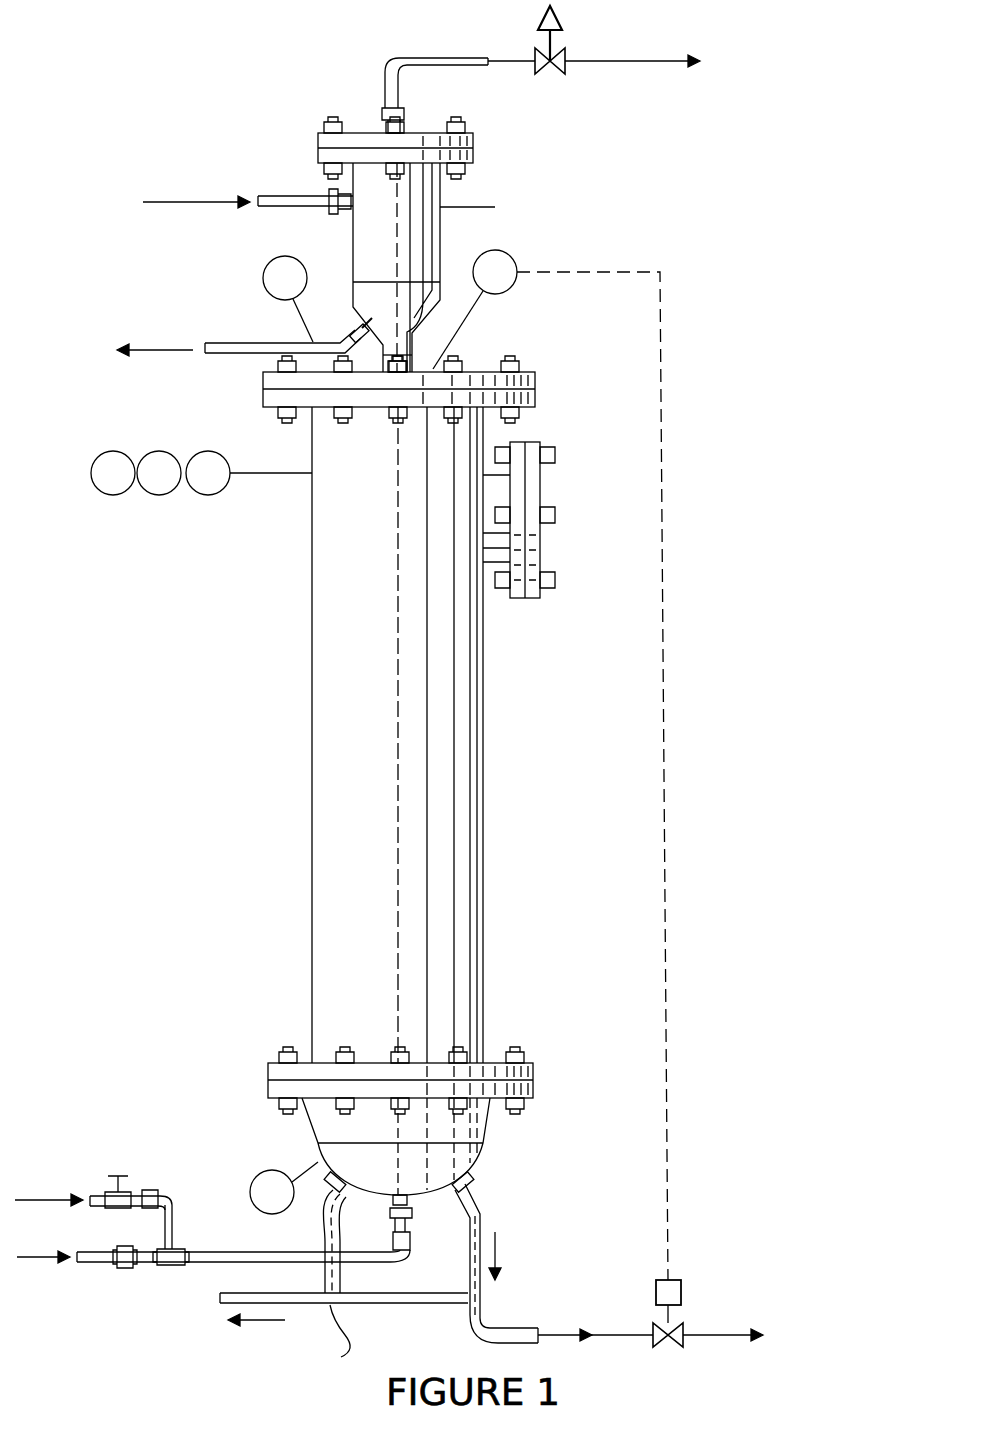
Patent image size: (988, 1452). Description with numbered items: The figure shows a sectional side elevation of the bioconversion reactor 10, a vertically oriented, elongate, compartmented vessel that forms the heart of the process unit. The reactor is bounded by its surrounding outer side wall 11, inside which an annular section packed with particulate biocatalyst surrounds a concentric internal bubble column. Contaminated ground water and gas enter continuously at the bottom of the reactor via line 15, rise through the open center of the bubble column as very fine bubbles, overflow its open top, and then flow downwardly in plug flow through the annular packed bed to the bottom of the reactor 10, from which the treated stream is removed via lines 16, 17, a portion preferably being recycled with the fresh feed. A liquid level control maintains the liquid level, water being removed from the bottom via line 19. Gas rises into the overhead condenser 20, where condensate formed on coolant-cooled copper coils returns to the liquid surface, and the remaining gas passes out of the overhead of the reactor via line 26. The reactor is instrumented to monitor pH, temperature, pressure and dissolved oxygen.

The bioconversion reactor 10 is at (492, 796).
The outer side wall 11 is at (484, 710).
The line 15 is at (408, 1253).
The line 16 is at (341, 1246).
The line 17 is at (478, 1210).
The line 19 is at (520, 1325).
The overhead condenser 20 is at (446, 192).
The line 26 is at (430, 52).